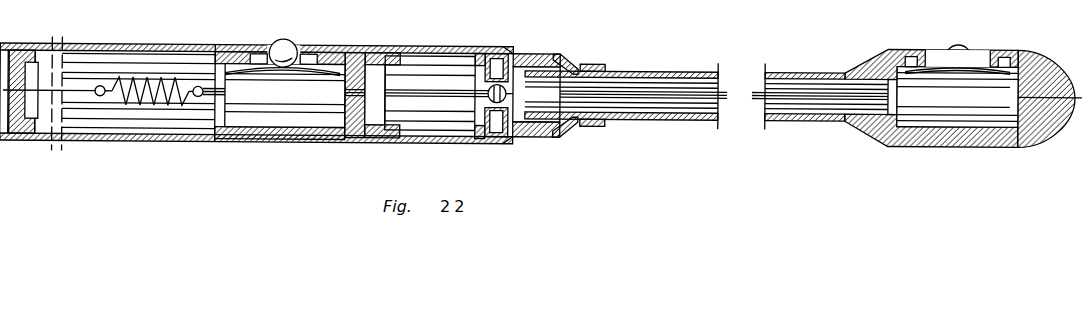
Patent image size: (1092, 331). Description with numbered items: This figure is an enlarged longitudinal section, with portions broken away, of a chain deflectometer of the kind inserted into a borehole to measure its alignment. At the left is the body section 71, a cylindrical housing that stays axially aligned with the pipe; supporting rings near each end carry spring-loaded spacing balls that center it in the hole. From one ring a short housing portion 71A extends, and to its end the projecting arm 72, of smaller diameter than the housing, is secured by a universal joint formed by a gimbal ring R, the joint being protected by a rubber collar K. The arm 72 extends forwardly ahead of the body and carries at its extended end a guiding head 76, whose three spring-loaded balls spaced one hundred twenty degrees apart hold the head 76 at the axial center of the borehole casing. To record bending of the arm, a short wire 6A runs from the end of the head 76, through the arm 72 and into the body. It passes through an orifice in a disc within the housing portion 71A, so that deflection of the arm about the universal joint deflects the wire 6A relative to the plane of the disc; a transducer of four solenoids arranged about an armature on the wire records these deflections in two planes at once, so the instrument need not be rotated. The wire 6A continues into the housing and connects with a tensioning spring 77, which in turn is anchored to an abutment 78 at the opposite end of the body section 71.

The abutment 78 is at (36, 45).
The body section 71 is at (104, 27).
The housing portion 71A is at (443, 48).
The wire 6A is at (432, 92).
The rubber collar K is at (568, 63).
The projecting arm 72 is at (687, 67).
The gimbal ring R is at (552, 128).
The tensioning spring 77 is at (156, 100).
The guiding head 76 is at (1068, 70).